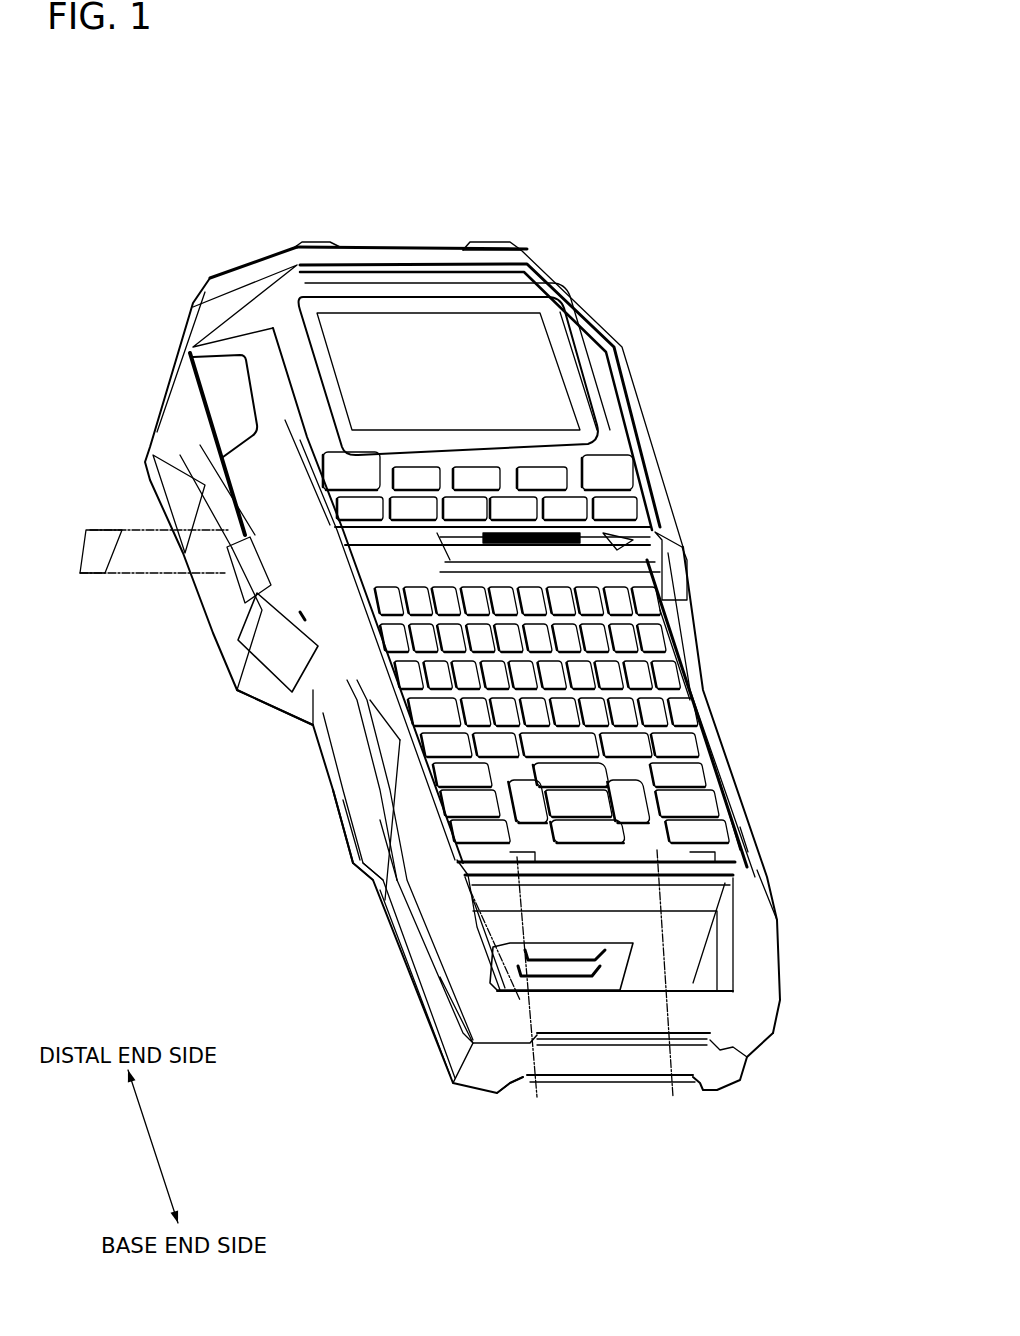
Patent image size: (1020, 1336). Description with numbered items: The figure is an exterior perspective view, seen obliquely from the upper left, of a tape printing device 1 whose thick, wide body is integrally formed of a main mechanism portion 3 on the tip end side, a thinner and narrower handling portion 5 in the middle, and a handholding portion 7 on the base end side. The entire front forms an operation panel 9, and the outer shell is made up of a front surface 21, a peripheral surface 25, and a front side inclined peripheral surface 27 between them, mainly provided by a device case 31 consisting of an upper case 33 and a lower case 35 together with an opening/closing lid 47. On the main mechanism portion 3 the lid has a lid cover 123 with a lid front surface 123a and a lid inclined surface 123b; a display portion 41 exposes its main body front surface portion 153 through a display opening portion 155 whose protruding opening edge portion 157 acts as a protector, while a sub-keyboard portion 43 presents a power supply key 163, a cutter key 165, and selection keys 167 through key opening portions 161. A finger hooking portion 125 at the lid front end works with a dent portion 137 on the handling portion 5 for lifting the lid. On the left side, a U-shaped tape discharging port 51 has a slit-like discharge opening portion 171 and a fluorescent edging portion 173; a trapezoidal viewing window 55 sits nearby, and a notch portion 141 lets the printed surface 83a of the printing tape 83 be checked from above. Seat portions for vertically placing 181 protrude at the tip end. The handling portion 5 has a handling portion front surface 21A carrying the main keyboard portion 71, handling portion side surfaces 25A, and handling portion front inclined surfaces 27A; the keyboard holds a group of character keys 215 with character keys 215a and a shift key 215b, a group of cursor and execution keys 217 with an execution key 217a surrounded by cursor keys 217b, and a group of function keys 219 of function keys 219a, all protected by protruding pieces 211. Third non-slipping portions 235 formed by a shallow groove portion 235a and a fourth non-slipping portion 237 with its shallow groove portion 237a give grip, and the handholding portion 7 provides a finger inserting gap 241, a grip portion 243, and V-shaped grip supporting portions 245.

The tape printing device 1 is at (441, 125).
The main mechanism portion 3 is at (651, 242).
The handling portion 5 is at (800, 592).
The handholding portion 7 is at (805, 933).
The operation panel 9 is at (598, 386).
The front surface 21 is at (277, 680).
The handling portion front surface 21A is at (214, 715).
The peripheral surface 25 is at (340, 783).
The handling portion side surfaces 25A is at (292, 781).
The front side inclined peripheral surface 27 is at (693, 647).
The handling portion front inclined surfaces 27A is at (490, 715).
The device case 31 is at (517, 700).
The upper case 33 is at (680, 510).
The lower case 35 is at (365, 930).
The display portion 41 is at (528, 324).
The sub-keyboard portion 43 is at (447, 467).
The opening/closing lid 47 is at (423, 270).
The tape discharging port 51 is at (150, 460).
The viewing window 55 is at (207, 410).
The main keyboard portion 71 is at (706, 716).
The printing tape 83 is at (82, 550).
The printed surface 83a is at (117, 572).
The lid cover 123 is at (262, 305).
The lid front surface 123a is at (622, 405).
The lid inclined surface 123b is at (187, 340).
The finger hooking portion 125 is at (667, 563).
The dent portion 137 is at (667, 590).
The notch portion 141 is at (220, 473).
The main body front surface portion 153 is at (448, 371).
The display opening portion 155 is at (575, 335).
The opening edge portion 157 is at (490, 300).
The key opening portions 161 is at (520, 467).
The power supply key 163 is at (612, 466).
The cutter key 165 is at (352, 462).
The selection keys 167 is at (300, 688).
The discharge opening portion 171 is at (197, 592).
The edging portion 173 is at (208, 504).
The seat portions for vertically placing 181 is at (300, 244).
The protruding pieces 211 is at (745, 872).
The group of character keys 215 is at (683, 688).
The character keys 215a is at (373, 693).
The shift key 215b is at (380, 820).
The group of cursor and execution keys 217 is at (572, 1080).
The execution key 217a is at (660, 1095).
The cursor keys 217b is at (773, 1033).
The group of function keys 219 is at (716, 776).
The function keys 219a is at (740, 827).
The third non-slipping portions 235 is at (340, 870).
The shallow groove portion 235a is at (277, 868).
The fourth non-slipping portion 237 is at (230, 641).
The shallow groove portion 237a is at (169, 642).
The finger inserting gap 241 is at (635, 970).
The grip portion 243 is at (600, 1045).
The grip supporting portions 245 is at (423, 1007).